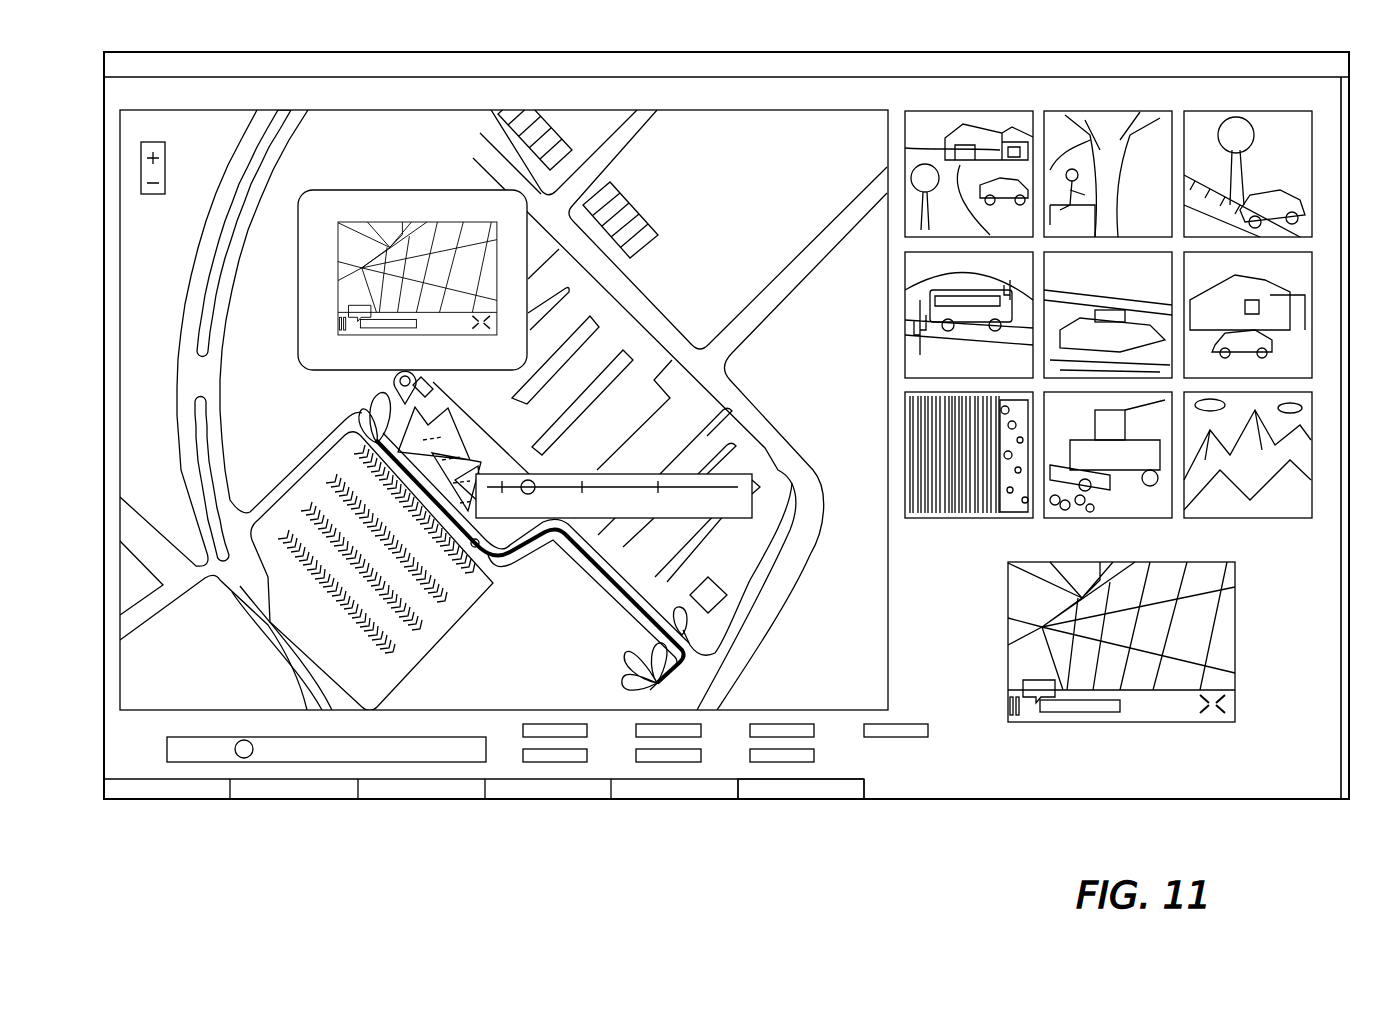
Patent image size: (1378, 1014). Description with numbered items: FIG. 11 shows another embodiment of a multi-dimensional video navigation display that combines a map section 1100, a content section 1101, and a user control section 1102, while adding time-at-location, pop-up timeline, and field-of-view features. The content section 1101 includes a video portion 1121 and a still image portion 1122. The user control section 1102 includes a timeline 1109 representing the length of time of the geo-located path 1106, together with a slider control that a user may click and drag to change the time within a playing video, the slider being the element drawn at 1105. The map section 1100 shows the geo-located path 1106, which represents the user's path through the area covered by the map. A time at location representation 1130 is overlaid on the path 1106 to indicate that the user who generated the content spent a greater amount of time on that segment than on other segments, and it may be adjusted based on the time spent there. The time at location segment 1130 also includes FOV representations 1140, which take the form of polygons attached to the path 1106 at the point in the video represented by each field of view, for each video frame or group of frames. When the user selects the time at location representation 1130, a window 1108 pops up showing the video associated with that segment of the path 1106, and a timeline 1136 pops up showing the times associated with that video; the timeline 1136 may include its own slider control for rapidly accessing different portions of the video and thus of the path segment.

The map section 1100 is at (118, 612).
The content section 1101 is at (1040, 748).
The user control section 1102 is at (490, 835).
The slider control 1105 is at (325, 752).
The geo-located path 1106 is at (601, 578).
The window 1108 is at (373, 335).
The timeline 1109 is at (810, 790).
The video portion 1121 is at (1228, 634).
The still image portion 1122 is at (1298, 278).
The time at location representation 1130 is at (376, 438).
The timeline 1136 is at (566, 472).
The FOV representations 1140 is at (470, 440).